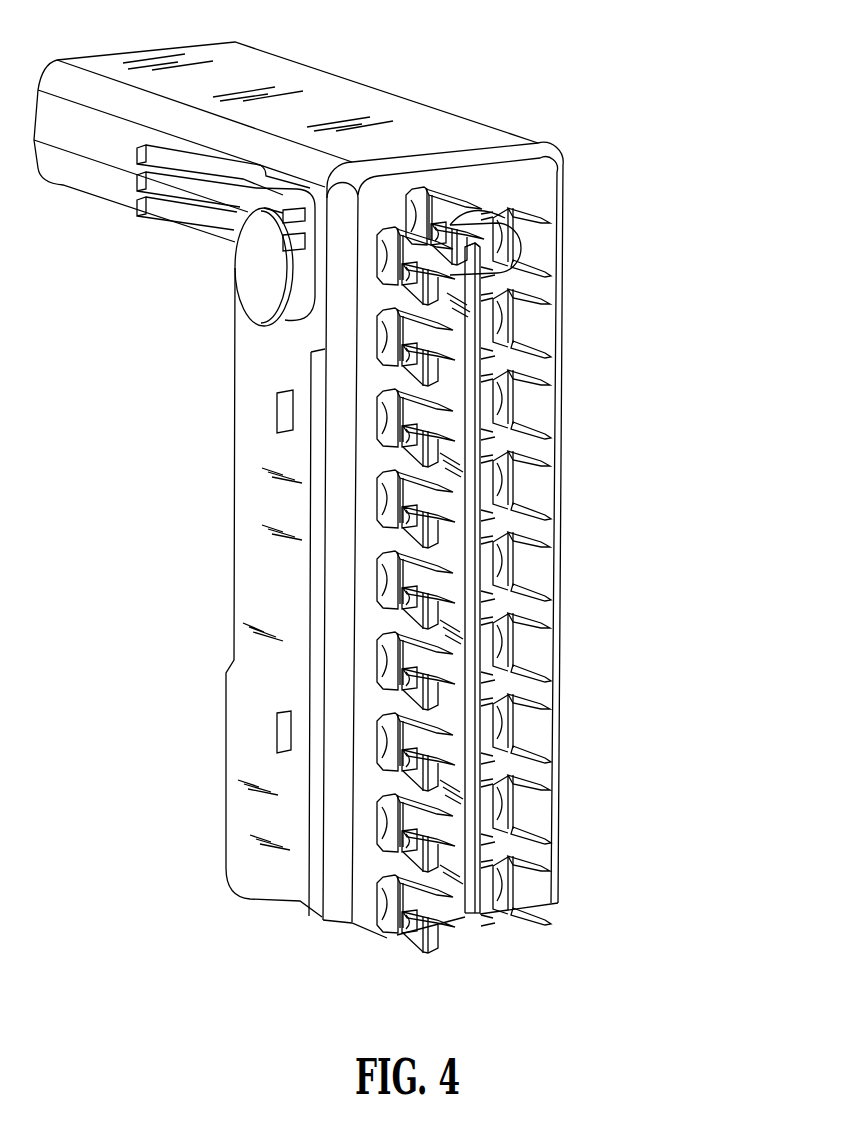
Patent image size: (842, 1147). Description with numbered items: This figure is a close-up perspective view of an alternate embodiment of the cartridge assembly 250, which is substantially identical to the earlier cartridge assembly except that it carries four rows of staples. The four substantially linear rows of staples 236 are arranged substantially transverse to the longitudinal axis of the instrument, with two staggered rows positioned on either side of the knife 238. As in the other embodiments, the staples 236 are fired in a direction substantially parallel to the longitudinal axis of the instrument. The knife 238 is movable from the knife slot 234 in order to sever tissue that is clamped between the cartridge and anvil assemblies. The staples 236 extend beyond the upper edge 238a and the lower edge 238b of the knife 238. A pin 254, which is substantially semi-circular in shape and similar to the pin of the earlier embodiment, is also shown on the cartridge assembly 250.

The cartridge assembly 250 is at (452, 98).
The knife 238 is at (470, 437).
The upper edge of knife 238a is at (463, 225).
The lower edge of knife 238b is at (447, 910).
The knife slot 234 is at (395, 549).
The staples 236 is at (510, 298).
The pin 254 is at (503, 257).